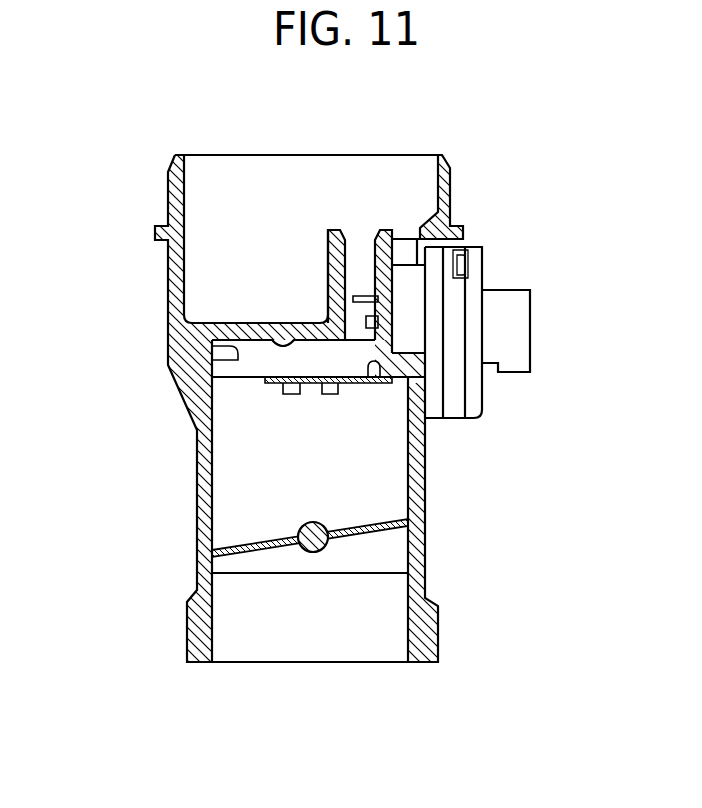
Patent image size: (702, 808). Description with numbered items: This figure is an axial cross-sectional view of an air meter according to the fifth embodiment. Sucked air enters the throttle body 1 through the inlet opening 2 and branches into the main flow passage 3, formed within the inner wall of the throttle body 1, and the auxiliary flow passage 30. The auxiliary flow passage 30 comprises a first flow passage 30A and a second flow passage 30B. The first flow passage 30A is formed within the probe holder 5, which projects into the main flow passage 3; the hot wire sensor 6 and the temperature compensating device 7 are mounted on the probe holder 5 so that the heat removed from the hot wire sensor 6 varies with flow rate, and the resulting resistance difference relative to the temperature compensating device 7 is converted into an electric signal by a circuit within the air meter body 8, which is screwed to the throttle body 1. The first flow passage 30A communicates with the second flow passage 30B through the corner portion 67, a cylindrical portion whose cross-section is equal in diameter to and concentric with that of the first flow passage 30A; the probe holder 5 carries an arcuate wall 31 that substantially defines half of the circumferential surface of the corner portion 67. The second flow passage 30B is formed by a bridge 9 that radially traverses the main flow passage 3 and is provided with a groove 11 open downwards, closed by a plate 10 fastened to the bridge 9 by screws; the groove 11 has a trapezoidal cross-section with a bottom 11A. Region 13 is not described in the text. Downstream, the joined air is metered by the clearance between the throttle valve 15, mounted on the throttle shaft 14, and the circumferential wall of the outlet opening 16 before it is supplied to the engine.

The throttle body 1 is at (132, 209).
The inlet opening 2 is at (197, 155).
The main flow passage 3 is at (272, 160).
The probe holder 5 is at (331, 302).
The hot wire sensor 6 is at (358, 298).
The temperature compensating device 7 is at (396, 332).
The air meter body 8 is at (531, 320).
The bridge 9 is at (233, 361).
The plate 10 is at (355, 385).
The groove 11 is at (216, 353).
The bottom 11A is at (283, 347).
The intermediate chamber 13 is at (244, 372).
The throttle shaft 14 is at (307, 553).
The throttle valve 15 is at (357, 537).
The outlet opening 16 is at (383, 558).
The auxiliary flow passage 30 is at (320, 255).
The first flow passage 30A is at (359, 247).
The second flow passage 30B is at (274, 383).
The arcuate wall 31 is at (374, 380).
The corner portion 67 is at (357, 356).